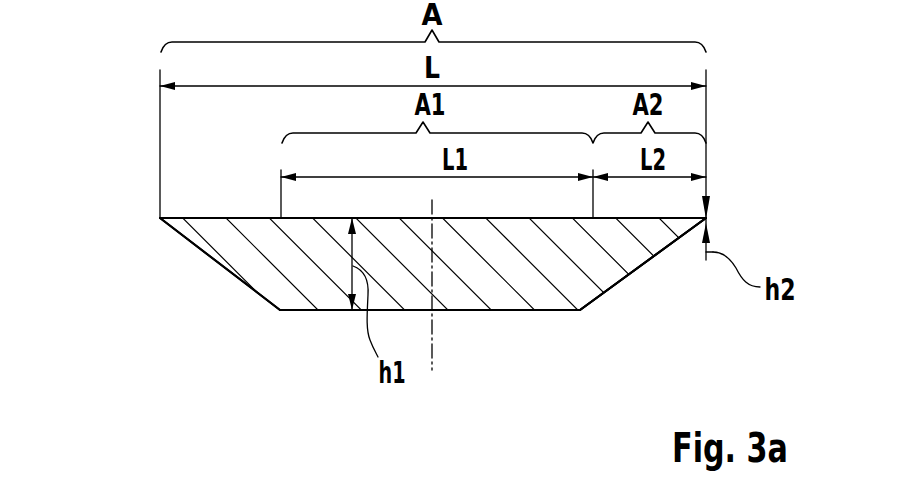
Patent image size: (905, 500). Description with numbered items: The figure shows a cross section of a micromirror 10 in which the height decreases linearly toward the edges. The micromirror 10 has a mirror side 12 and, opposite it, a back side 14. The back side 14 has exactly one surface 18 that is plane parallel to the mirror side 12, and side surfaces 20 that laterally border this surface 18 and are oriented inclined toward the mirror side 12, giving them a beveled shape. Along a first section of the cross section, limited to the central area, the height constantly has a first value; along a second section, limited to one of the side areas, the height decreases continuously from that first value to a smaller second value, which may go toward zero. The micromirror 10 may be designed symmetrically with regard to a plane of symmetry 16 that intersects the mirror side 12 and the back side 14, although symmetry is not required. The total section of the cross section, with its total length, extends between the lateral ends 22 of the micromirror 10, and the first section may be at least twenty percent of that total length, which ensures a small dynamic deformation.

The micromirror 10 is at (298, 293).
The mirror side 12 is at (246, 208).
The back side 14 is at (610, 302).
The plane of symmetry 16 is at (432, 325).
The surface 18 is at (335, 312).
The side surfaces 20 is at (220, 262).
The lateral ends 22 is at (150, 217).